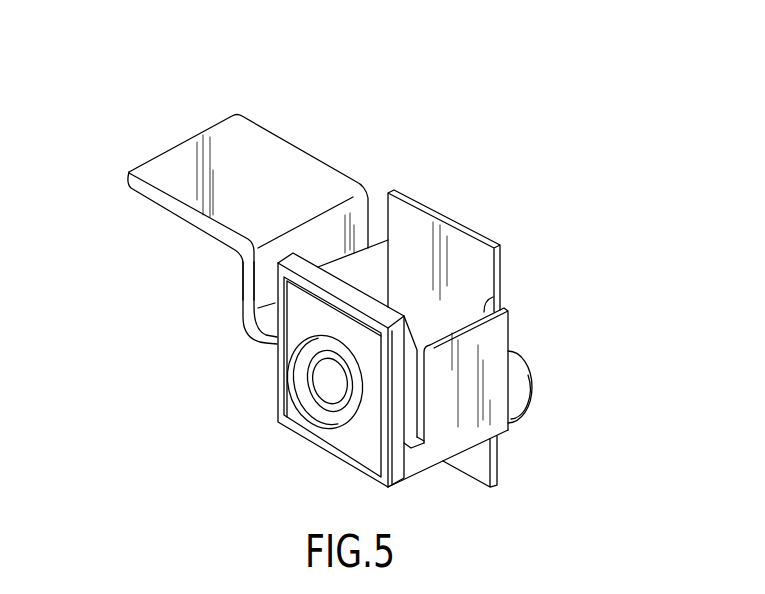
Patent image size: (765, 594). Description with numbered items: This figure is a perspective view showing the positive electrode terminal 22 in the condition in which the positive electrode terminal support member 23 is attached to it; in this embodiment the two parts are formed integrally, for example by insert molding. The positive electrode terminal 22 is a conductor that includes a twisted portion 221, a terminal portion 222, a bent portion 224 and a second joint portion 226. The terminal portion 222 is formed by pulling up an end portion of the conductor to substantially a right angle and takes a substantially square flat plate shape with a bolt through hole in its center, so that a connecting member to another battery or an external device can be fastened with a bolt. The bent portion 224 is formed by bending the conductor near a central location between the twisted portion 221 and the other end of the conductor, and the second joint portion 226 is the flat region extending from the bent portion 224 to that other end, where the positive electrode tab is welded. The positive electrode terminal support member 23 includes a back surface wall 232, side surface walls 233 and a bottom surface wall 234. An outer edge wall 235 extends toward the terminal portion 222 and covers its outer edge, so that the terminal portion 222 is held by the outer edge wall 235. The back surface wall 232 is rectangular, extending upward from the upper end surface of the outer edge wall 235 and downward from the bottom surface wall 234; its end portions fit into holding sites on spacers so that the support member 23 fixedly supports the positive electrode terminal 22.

The positive electrode terminal 22 is at (248, 205).
The second joint portion 226 is at (248, 140).
The bent portion 224 is at (247, 279).
The outer edge wall 235 is at (273, 276).
The positive electrode terminal support member 23 is at (402, 326).
The terminal portion 222 is at (290, 400).
The twisted portion 221 is at (530, 367).
The back surface wall 232 is at (435, 208).
The side surface walls 233 is at (375, 240).
The bottom surface wall 234 is at (443, 460).